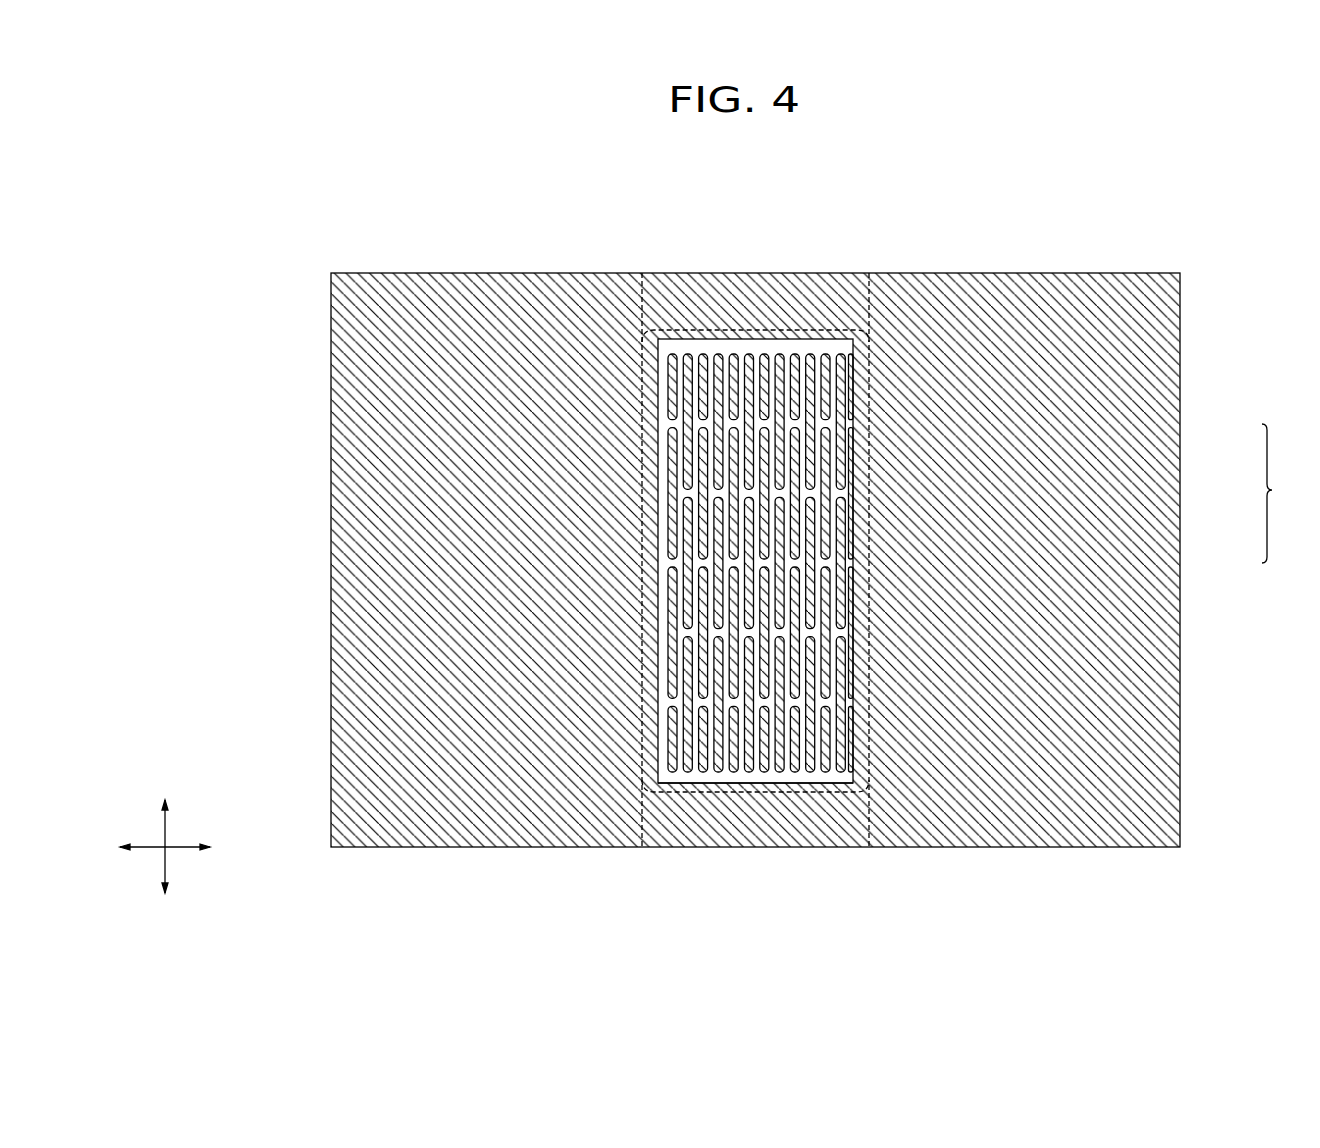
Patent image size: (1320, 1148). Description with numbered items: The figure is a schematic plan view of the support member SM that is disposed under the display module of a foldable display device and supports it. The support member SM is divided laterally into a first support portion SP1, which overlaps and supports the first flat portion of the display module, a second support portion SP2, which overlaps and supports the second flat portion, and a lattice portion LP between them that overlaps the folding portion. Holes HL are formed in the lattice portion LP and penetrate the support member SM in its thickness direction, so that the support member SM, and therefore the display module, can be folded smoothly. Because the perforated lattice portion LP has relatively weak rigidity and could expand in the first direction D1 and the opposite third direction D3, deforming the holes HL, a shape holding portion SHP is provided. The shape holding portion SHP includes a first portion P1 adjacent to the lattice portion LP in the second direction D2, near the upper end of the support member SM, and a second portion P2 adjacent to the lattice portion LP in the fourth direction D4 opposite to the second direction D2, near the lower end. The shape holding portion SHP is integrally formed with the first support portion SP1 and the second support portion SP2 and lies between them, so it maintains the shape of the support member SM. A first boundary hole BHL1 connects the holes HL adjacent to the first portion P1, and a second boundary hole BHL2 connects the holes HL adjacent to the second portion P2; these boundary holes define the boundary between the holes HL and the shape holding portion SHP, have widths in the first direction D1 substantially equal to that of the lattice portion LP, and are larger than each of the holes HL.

The support member SM is at (1234, 280).
The first support portion SP1 is at (477, 303).
The second support portion SP2 is at (1025, 304).
The lattice portion LP is at (753, 326).
The first boundary hole BHL1 is at (652, 344).
The second boundary hole BHL2 is at (652, 784).
The holes HL is at (653, 503).
The first portion P1 is at (826, 311).
The second portion P2 is at (818, 823).
The shape holding portion SHP is at (1286, 493).
The first direction D1 is at (201, 848).
The second direction D2 is at (165, 813).
The third direction D3 is at (127, 848).
The fourth direction D4 is at (165, 884).